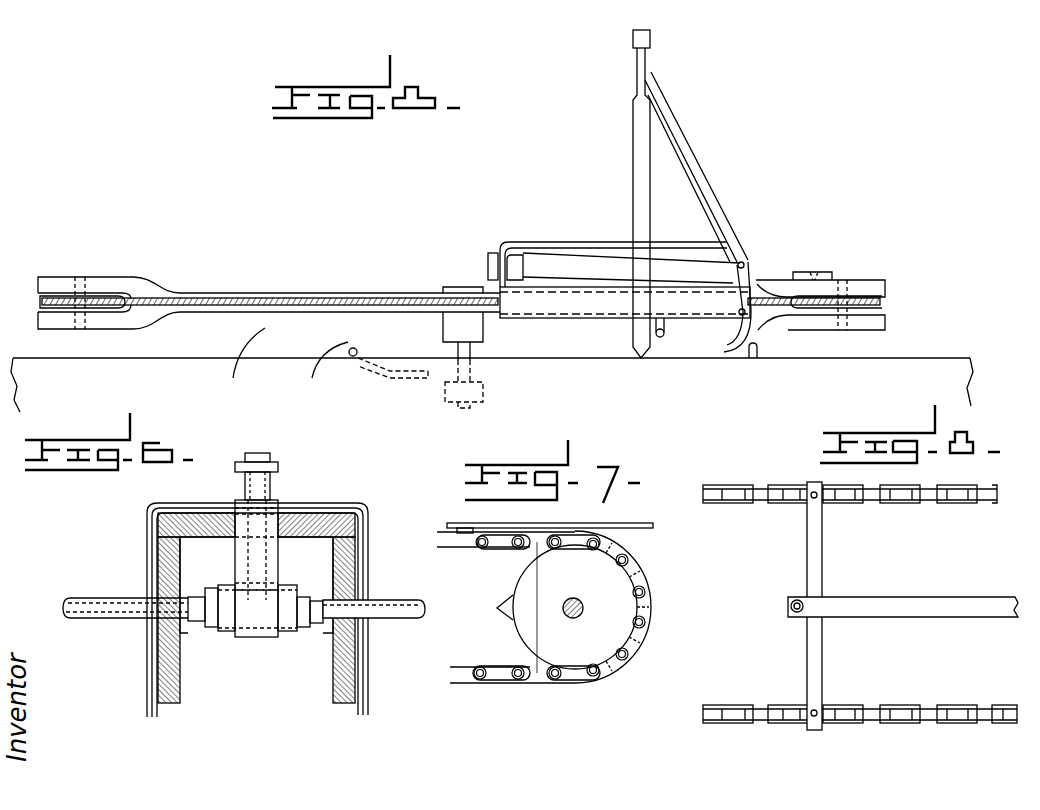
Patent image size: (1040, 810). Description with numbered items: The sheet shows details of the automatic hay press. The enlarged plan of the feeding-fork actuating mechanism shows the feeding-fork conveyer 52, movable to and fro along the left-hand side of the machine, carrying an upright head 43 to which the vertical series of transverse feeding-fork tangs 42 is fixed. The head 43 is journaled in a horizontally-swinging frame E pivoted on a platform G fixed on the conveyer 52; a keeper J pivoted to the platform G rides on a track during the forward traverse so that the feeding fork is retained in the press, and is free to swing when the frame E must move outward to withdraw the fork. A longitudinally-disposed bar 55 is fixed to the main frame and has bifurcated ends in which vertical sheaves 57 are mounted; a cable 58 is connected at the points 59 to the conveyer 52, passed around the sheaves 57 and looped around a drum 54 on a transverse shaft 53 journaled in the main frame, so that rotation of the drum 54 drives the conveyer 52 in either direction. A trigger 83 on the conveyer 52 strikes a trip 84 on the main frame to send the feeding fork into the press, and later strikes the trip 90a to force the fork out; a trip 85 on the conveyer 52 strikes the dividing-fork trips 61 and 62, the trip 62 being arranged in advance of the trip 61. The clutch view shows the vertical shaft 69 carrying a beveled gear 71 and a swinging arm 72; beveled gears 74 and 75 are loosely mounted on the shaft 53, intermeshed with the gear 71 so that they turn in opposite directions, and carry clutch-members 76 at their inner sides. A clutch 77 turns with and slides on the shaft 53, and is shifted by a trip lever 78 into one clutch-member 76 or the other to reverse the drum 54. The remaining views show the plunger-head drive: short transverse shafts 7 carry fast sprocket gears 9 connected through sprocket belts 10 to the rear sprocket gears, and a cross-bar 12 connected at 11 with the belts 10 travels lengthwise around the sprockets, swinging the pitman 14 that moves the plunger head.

In FIG. 3, the head 43 is at (650, 40).
In FIG. 3, the feeding-fork tangs 42 is at (637, 177).
In FIG. 3, the horizontally-swinging frame E is at (708, 200).
In FIG. 3, the platform G is at (563, 242).
In FIG. 3, the keeper J is at (499, 256).
In FIG. 3, the vertical sheaves 57 is at (50, 298).
In FIG. 3, the longitudinally-disposed bar 55 is at (312, 298).
In FIG. 3, the cable 58 is at (386, 300).
In FIG. 3, the connection points 59 is at (497, 295).
In FIG. 3, the drum 54 is at (456, 325).
In FIG. 3, the transverse shaft 53 is at (470, 353).
In FIG. 6, the transverse shaft 53 is at (95, 617).
In FIG. 3, the feeding-fork conveyer 52 is at (571, 319).
In FIG. 3, the dividing-fork trip 61 is at (248, 360).
In FIG. 3, the dividing-fork trip 62 is at (331, 366).
In FIG. 3, the trip 84 is at (353, 356).
In FIG. 3, the trip 85 is at (664, 334).
In FIG. 3, the trigger 83 is at (745, 333).
In FIG. 3, the trip 90a is at (758, 351).
In FIG. 6, the swinging arm 72 is at (272, 463).
In FIG. 6, the vertical shaft 69 is at (273, 473).
In FIG. 6, the beveled gear 71 is at (318, 517).
In FIG. 6, the beveled gear 74 is at (168, 693).
In FIG. 6, the beveled gear 75 is at (343, 697).
In FIG. 6, the clutch-members 76 is at (192, 590).
In FIG. 6, the clutch 77 is at (292, 592).
In FIG. 6, the trip lever 78 is at (403, 608).
In FIG. 7, the sprocket gears 9 is at (524, 585).
In FIG. 7, the transverse shafts 7 is at (570, 598).
In FIG. 7, the sprocket belts 10 is at (462, 541).
In FIG. 8, the sprocket belts 10 is at (888, 503).
In FIG. 7, the cross-bar 12 is at (463, 528).
In FIG. 8, the cross-bar 12 is at (820, 542).
In FIG. 7, the pitman 14 is at (640, 525).
In FIG. 8, the pitman 14 is at (905, 608).
In FIG. 8, the connection 11 is at (810, 498).